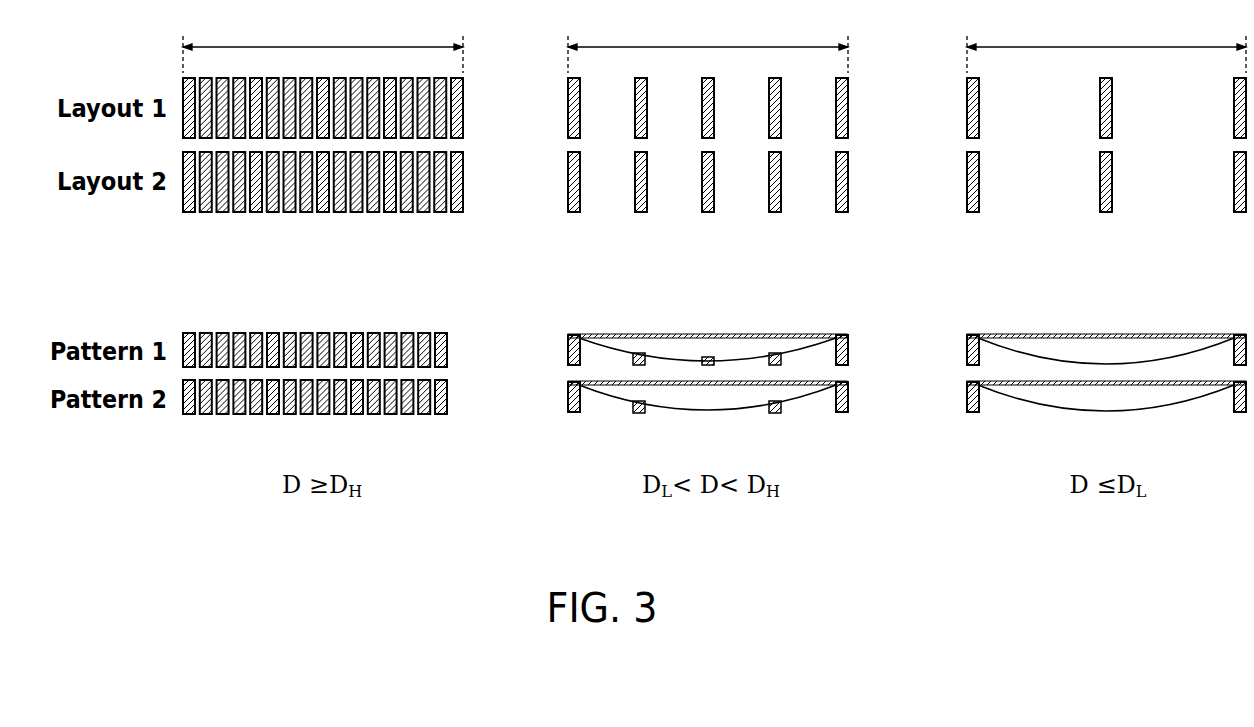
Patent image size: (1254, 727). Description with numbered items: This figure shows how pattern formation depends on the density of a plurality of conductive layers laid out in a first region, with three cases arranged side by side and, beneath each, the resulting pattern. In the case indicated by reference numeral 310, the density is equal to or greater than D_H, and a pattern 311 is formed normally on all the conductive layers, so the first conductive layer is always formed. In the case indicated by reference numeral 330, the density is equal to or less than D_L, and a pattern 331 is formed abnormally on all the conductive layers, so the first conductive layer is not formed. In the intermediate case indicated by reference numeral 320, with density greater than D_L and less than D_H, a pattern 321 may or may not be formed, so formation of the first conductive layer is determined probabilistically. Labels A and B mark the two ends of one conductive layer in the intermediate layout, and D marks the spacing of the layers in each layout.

The layout with density equal to or greater than D_H 310 is at (323, 132).
The pattern 311 is at (315, 398).
The layout with density between D_L and D_H 320 is at (708, 132).
The pattern 321 is at (708, 398).
The layout with density equal to or less than D_L 330 is at (1106, 132).
The pattern 331 is at (1106, 398).
The top end of line feature A is at (714, 83).
The bottom end of line feature B is at (714, 129).